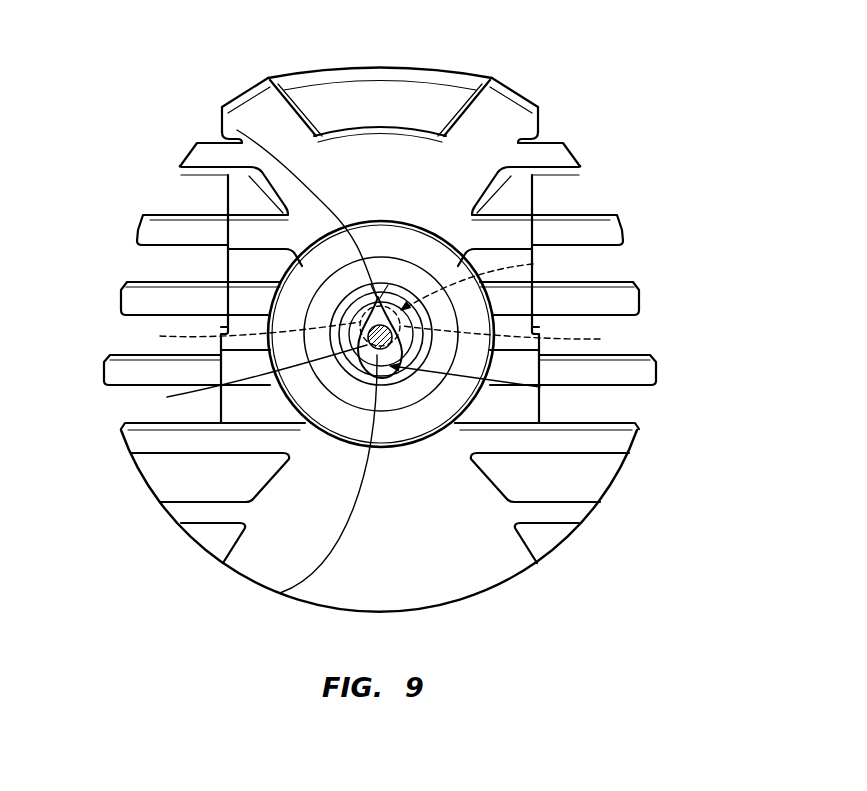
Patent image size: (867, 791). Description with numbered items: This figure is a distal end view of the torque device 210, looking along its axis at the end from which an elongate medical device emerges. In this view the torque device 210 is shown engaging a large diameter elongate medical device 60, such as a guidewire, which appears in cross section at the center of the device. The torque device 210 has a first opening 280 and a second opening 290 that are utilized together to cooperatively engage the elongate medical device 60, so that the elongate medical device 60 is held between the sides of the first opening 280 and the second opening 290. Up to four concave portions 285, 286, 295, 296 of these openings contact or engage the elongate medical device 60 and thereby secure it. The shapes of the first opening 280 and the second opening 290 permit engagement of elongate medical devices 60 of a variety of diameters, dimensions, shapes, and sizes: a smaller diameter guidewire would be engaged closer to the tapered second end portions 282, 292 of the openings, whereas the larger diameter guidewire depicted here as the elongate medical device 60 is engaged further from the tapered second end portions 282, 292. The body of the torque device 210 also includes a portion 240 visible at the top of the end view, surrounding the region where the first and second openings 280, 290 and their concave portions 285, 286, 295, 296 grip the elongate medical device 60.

The torque device 210 is at (568, 57).
The top cap portion 240 is at (403, 90).
The first opening 280 is at (455, 395).
The elongate medical device 60 is at (396, 343).
The tapered second end portion 282 is at (237, 130).
The concave portion 285 is at (167, 397).
The concave portion 286 is at (540, 387).
The second opening 290 is at (533, 264).
The tapered second end portion 292 is at (280, 593).
The concave portion 295 is at (160, 336).
The concave portion 296 is at (600, 339).